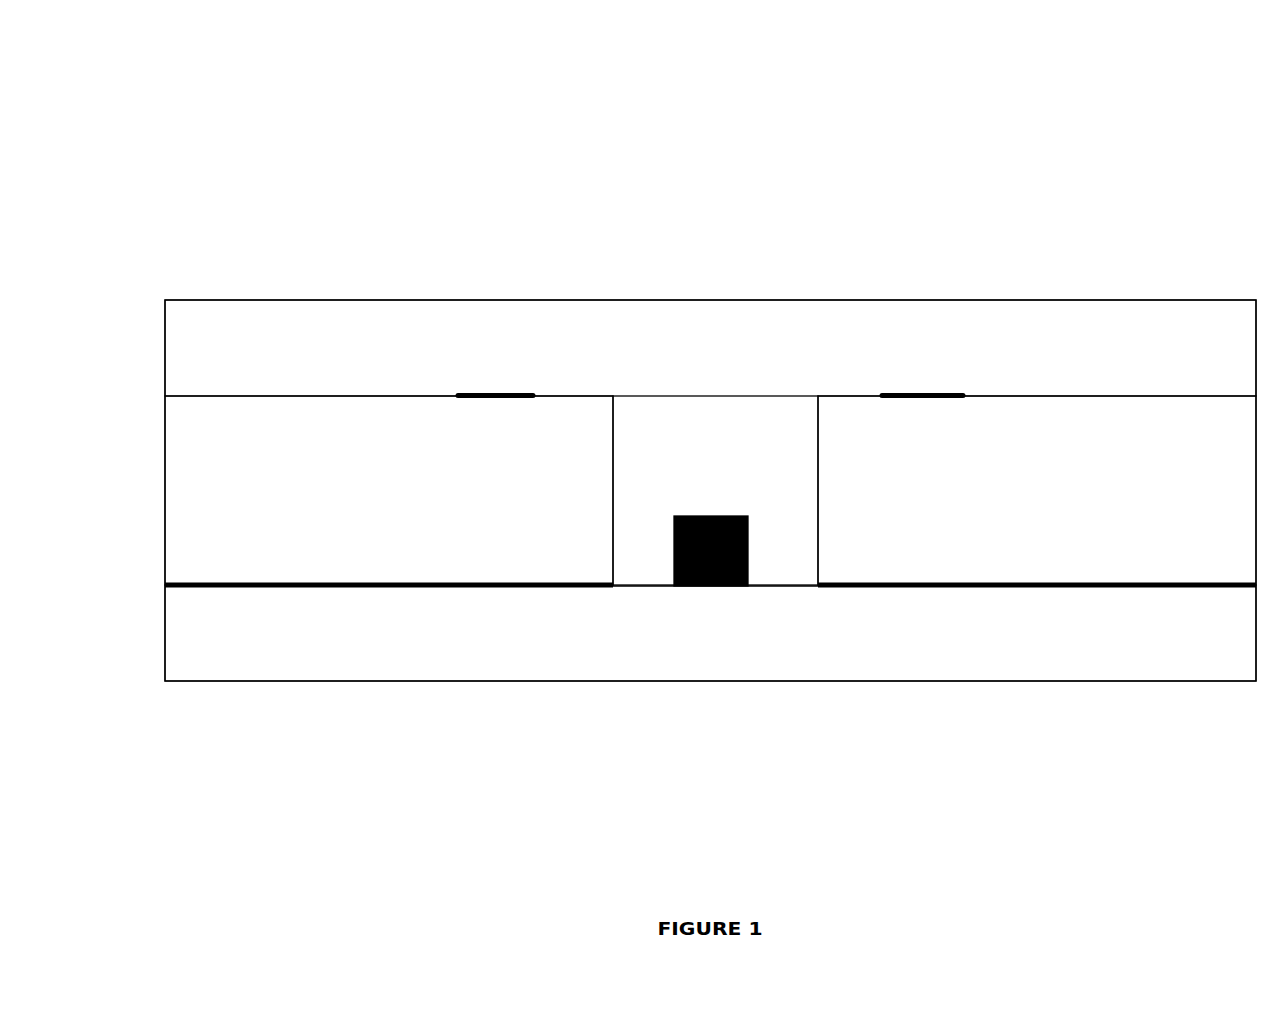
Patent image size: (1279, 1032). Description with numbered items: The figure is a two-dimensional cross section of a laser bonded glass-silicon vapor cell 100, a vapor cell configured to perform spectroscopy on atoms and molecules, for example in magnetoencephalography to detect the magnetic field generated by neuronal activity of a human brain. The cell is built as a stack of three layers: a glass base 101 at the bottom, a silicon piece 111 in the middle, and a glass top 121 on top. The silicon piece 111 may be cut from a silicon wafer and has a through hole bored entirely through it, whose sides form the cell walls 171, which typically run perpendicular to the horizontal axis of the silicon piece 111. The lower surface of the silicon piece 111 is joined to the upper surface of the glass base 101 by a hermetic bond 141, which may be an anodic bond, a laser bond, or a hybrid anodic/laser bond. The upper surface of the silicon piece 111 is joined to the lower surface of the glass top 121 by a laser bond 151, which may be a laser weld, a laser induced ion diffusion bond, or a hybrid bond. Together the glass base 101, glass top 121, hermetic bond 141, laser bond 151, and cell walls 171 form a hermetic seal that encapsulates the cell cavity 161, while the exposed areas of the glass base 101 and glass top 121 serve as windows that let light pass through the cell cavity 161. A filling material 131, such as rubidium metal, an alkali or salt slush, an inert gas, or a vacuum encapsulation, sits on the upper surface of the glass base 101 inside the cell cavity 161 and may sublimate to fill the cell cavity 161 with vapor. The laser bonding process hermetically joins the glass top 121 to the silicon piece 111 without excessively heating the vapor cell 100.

The laser bonded glass-silicon vapor cell 100 is at (143, 38).
The glass base 101 is at (792, 642).
The silicon piece 111 is at (1087, 510).
The glass top 121 is at (785, 357).
The filling material 131 is at (765, 471).
The hermetic bond 141 is at (435, 588).
The laser bond 151 is at (930, 392).
The cell cavity 161 is at (772, 545).
The cell walls 171 is at (610, 465).